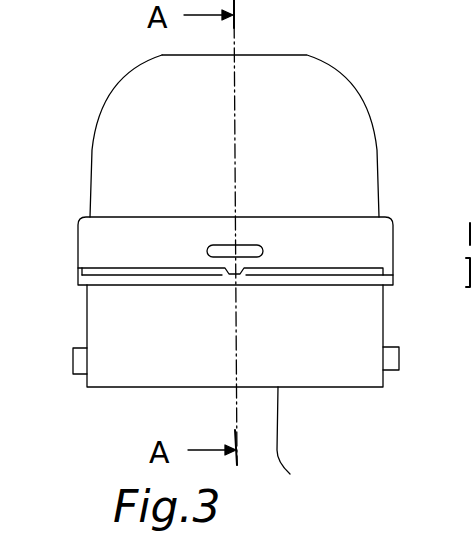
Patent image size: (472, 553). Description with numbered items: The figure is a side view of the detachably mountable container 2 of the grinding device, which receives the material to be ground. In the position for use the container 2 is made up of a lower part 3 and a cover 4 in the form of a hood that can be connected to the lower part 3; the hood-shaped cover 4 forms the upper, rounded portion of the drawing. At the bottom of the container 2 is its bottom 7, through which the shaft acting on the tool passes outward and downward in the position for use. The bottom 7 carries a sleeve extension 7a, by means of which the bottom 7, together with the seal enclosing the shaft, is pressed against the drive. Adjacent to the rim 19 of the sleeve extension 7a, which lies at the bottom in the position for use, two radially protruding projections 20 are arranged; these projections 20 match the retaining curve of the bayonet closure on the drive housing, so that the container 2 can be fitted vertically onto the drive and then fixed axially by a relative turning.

The container 2 is at (249, 108).
The lower part 3 is at (327, 367).
The cover 4 is at (362, 100).
The bottom 7 is at (471, 355).
The sleeve extension 7a is at (372, 320).
The rim 19 is at (293, 449).
The projections 20 is at (78, 364).